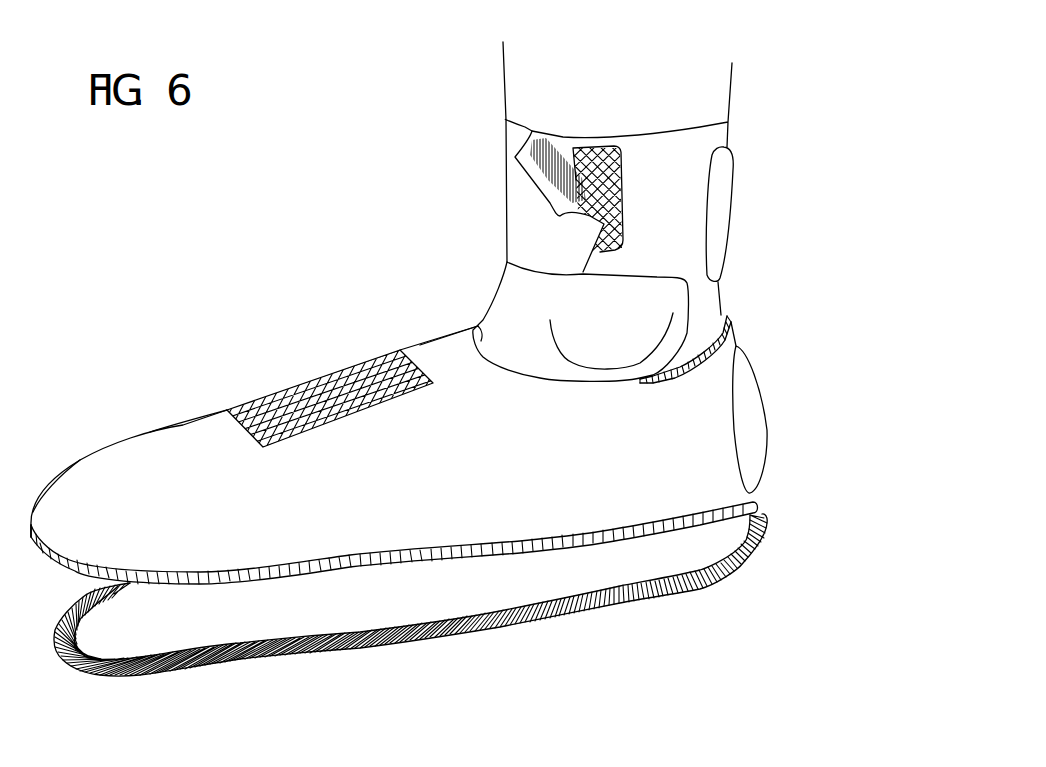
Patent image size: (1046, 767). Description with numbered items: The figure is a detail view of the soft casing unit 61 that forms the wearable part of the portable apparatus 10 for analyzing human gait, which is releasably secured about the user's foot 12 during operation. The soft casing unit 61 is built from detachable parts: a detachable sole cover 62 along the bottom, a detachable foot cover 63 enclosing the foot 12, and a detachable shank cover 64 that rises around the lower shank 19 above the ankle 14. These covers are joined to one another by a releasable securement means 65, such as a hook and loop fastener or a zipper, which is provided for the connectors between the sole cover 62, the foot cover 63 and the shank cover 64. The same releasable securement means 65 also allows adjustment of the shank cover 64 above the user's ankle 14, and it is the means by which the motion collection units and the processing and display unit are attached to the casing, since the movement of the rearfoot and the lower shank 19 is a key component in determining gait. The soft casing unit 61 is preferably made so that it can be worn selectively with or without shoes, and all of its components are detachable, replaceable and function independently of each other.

The portable apparatus 10 is at (366, 328).
The foot 12 is at (203, 391).
The ankle 14 is at (622, 342).
The lower shank 19 is at (533, 227).
The soft casing unit 61 is at (145, 479).
The sole cover 62 is at (360, 612).
The foot cover 63 is at (452, 456).
The shank cover 64 is at (671, 158).
The releasable securement means 65 is at (563, 127).